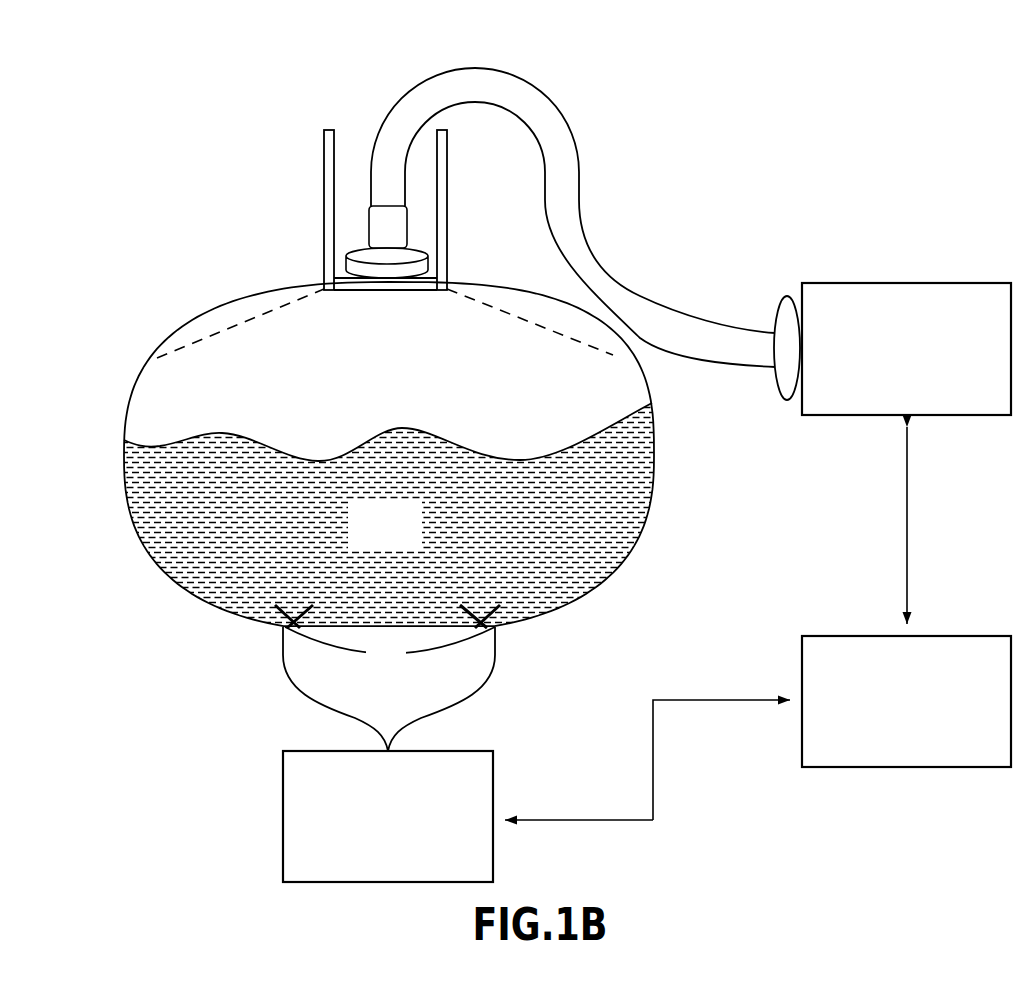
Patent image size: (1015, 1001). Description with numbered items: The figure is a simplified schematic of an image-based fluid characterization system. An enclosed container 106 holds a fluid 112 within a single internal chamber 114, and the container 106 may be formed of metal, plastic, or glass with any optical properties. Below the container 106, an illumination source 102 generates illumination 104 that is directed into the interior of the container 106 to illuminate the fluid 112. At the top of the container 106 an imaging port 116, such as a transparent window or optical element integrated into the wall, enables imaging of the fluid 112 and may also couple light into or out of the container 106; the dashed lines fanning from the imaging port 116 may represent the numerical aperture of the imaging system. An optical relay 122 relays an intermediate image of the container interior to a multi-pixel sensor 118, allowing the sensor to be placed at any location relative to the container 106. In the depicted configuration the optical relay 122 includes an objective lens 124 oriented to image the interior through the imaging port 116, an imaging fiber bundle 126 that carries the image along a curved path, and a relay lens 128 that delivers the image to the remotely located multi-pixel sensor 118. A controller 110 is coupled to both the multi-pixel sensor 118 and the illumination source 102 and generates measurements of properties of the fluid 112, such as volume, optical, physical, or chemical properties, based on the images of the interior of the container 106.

The illumination source 102 is at (290, 778).
The illumination 104 is at (387, 678).
The container 106 is at (147, 369).
The controller 110 is at (845, 663).
The fluid 112 is at (367, 524).
The chamber 114 is at (150, 416).
The imaging port 116 is at (352, 281).
The multi-pixel sensor 118 is at (809, 309).
The optical relay 122 is at (612, 134).
The objective lens 124 is at (374, 227).
The imaging fiber bundle 126 is at (474, 70).
The relay lens 128 is at (786, 397).